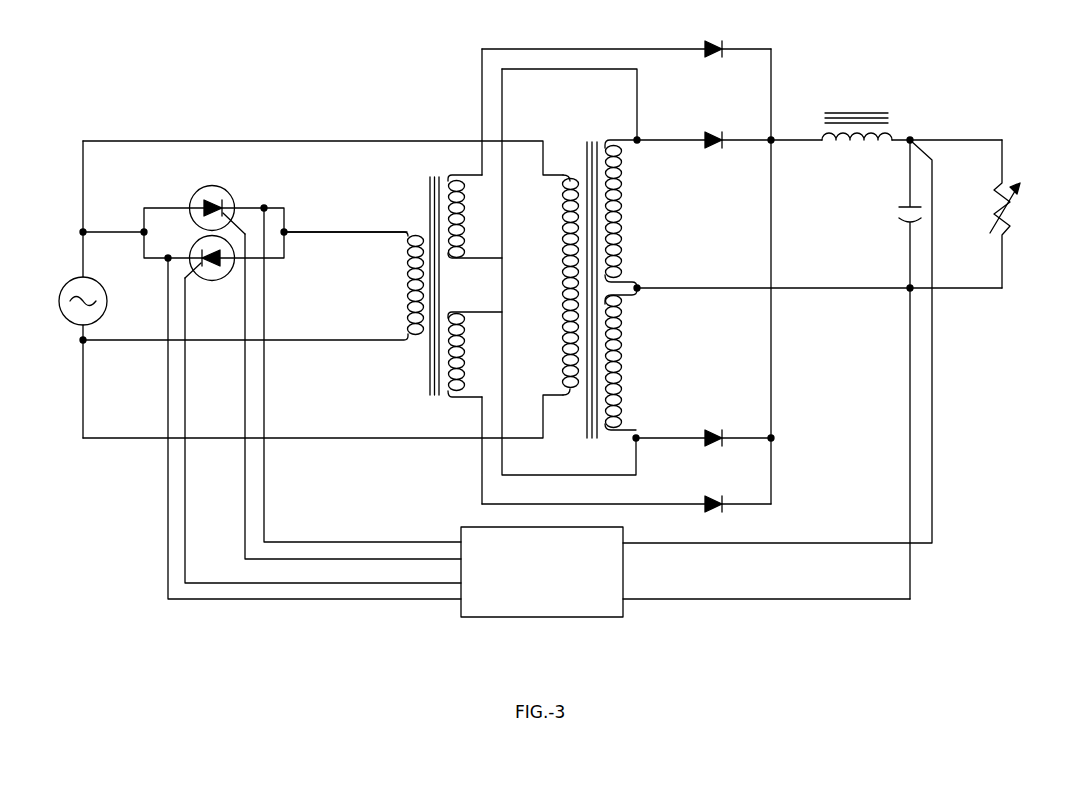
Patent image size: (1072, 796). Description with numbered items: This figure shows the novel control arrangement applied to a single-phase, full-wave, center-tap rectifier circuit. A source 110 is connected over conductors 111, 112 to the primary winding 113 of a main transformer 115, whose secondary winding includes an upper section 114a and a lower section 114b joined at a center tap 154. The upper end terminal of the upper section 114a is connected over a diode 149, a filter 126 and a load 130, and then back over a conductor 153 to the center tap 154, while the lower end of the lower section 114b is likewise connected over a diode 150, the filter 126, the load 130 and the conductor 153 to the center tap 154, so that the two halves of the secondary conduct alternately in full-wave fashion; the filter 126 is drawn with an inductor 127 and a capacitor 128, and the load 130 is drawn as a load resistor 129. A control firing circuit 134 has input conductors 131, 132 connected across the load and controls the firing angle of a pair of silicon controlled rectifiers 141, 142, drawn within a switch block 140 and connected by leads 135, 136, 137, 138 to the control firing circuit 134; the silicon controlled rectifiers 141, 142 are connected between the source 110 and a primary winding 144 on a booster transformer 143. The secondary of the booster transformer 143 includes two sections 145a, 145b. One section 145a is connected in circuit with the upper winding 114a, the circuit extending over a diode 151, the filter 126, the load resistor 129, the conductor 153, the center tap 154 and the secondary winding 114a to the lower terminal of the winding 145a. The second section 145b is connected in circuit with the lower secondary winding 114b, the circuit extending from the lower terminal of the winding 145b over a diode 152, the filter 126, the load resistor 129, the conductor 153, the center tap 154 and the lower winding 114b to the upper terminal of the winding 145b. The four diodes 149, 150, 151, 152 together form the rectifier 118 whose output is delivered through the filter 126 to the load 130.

The source 110 is at (107, 285).
The conductor 111 is at (350, 136).
The conductor 112 is at (352, 436).
The primary winding 113 is at (553, 285).
The upper section of secondary winding 114a is at (619, 226).
The lower section of secondary winding 114b is at (635, 358).
The main transformer 115 is at (607, 273).
The rectifier 118 is at (652, 266).
The filter 126 is at (912, 339).
The filter inductor 127 is at (838, 155).
The filter capacitor 128 is at (896, 226).
The load resistor 129 is at (1016, 212).
The load 130 is at (1026, 183).
The input conductor 131 is at (797, 533).
The input conductor 132 is at (797, 598).
The control firing circuit 134 is at (566, 578).
The control lead 135 is at (388, 535).
The gate lead 136 is at (391, 577).
The gate lead 137 is at (325, 586).
The control lead 138 is at (332, 604).
The controlled rectifier switch 140 is at (245, 230).
The silicon controlled rectifier 141 is at (223, 191).
The silicon controlled rectifier 142 is at (214, 285).
The booster transformer 143 is at (292, 275).
The primary winding 144 is at (400, 284).
The secondary winding section 145a is at (470, 250).
The secondary winding section 145b is at (480, 318).
The diode 149 is at (712, 148).
The diode 150 is at (712, 424).
The diode 151 is at (699, 43).
The diode 152 is at (712, 499).
The conductor 153 is at (797, 283).
The center tap 154 is at (645, 290).